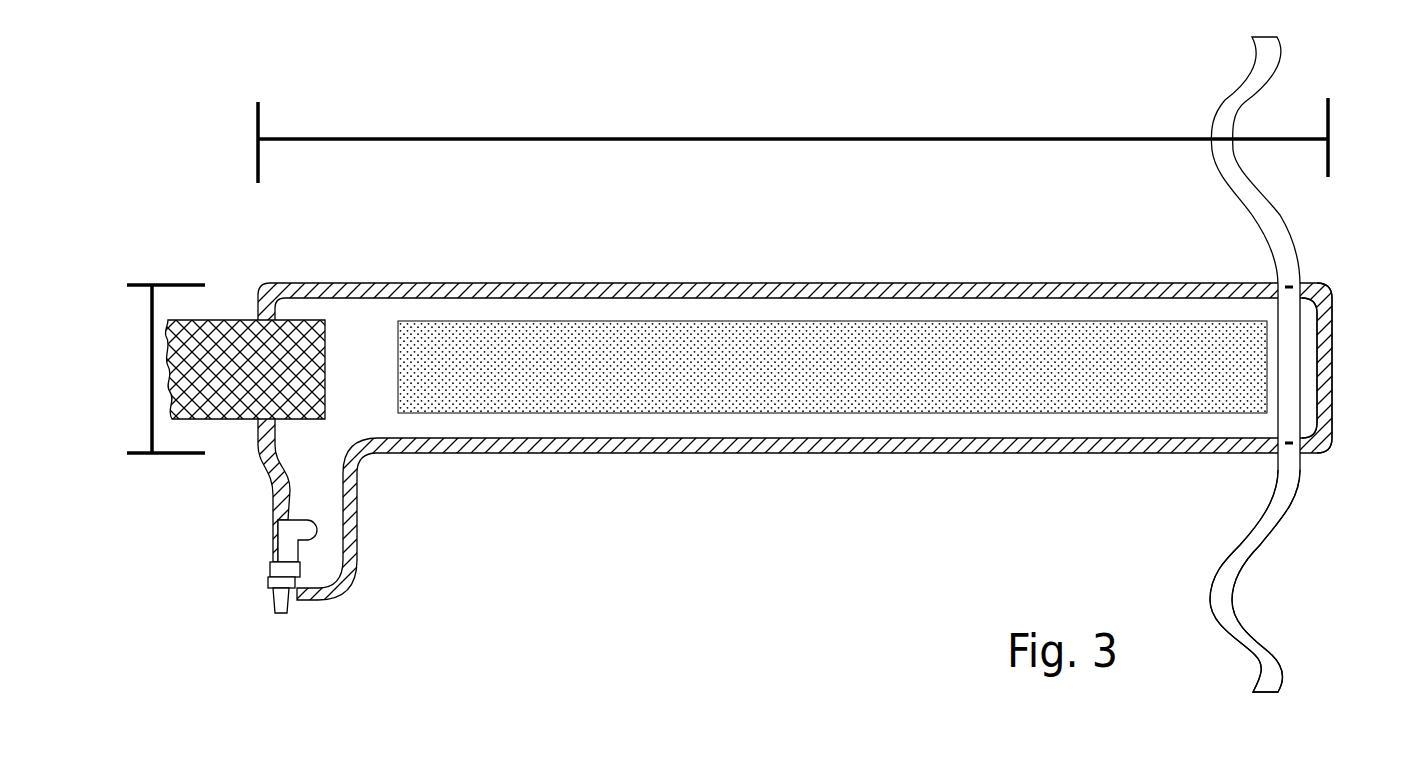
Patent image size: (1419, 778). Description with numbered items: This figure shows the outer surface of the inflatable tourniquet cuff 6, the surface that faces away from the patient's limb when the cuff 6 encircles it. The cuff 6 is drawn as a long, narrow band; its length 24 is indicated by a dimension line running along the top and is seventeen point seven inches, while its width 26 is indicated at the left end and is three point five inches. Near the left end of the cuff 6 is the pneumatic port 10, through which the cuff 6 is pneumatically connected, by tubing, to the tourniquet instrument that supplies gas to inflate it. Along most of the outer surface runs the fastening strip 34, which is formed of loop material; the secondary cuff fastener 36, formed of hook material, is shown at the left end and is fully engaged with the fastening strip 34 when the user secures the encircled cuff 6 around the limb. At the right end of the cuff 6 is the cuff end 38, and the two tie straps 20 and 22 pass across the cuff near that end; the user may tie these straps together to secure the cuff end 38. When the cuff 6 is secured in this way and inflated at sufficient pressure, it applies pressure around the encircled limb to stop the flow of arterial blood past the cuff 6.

The inflatable tourniquet cuff 6 is at (478, 453).
The pneumatic port 10 is at (298, 538).
The tie strap 20 is at (1287, 258).
The tie strap 22 is at (1282, 481).
The length 24 is at (865, 139).
The width 26 is at (146, 398).
The fastening strip 34 is at (513, 343).
The secondary cuff fastener 36 is at (237, 338).
The cuff end 38 is at (1332, 371).